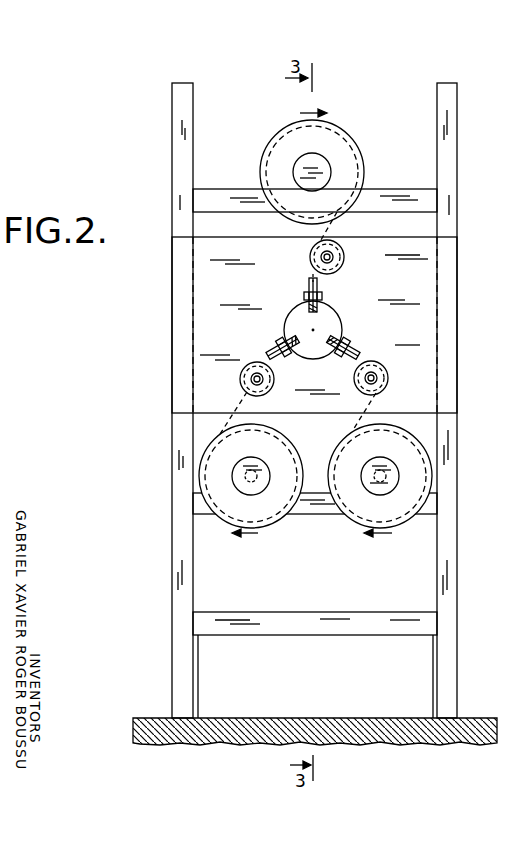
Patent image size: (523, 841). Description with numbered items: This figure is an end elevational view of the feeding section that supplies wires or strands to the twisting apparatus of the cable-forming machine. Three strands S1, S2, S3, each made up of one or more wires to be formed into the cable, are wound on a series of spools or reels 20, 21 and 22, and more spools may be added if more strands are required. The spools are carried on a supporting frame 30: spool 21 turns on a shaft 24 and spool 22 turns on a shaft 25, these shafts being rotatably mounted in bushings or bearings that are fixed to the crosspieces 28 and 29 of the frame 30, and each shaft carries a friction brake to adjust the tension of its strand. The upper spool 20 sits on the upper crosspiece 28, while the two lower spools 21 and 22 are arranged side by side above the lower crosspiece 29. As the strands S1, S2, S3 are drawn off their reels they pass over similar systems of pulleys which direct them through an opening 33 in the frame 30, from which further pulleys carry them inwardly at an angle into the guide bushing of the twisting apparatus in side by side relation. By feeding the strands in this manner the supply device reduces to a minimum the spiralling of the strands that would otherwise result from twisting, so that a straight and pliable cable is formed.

The spool 20 is at (350, 158).
The spool 21 is at (412, 458).
The spool 22 is at (280, 457).
The shaft 24 is at (382, 484).
The shaft 25 is at (250, 484).
The crosspiece 28 is at (401, 195).
The crosspiece 29 is at (316, 511).
The supporting frame 30 is at (427, 290).
The opening 33 is at (333, 322).
The strand S1 is at (333, 225).
The strand S2 is at (363, 357).
The strand S3 is at (265, 361).